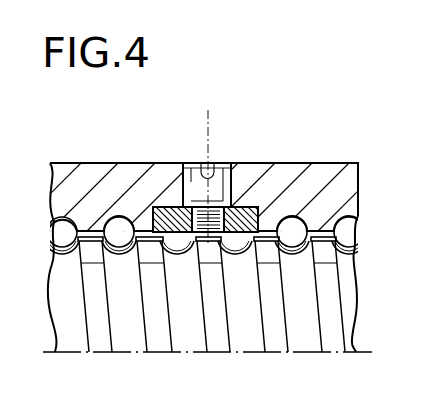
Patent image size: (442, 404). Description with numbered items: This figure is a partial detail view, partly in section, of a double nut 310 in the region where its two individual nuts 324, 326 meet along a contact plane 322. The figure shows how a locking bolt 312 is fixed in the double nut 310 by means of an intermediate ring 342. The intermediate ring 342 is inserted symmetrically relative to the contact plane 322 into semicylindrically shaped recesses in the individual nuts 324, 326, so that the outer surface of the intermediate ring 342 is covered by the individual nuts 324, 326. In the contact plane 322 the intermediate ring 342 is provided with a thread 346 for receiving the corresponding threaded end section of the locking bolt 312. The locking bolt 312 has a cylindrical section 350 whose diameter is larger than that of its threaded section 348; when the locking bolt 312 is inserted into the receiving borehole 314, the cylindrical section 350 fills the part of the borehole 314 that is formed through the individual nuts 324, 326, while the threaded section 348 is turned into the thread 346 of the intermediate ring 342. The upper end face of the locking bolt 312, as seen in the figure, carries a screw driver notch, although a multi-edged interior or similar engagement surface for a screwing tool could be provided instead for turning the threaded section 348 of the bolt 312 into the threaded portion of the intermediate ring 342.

The double nut 310 is at (307, 158).
The locking bolt 312 is at (219, 163).
The receiving borehole 314 is at (236, 178).
The contact plane 322 is at (209, 122).
The individual nut 324 is at (82, 183).
The individual nut 326 is at (331, 178).
The intermediate ring 342 is at (184, 232).
The thread 346 is at (203, 236).
The threaded section 348 is at (245, 236).
The cylindrical section 350 is at (191, 165).